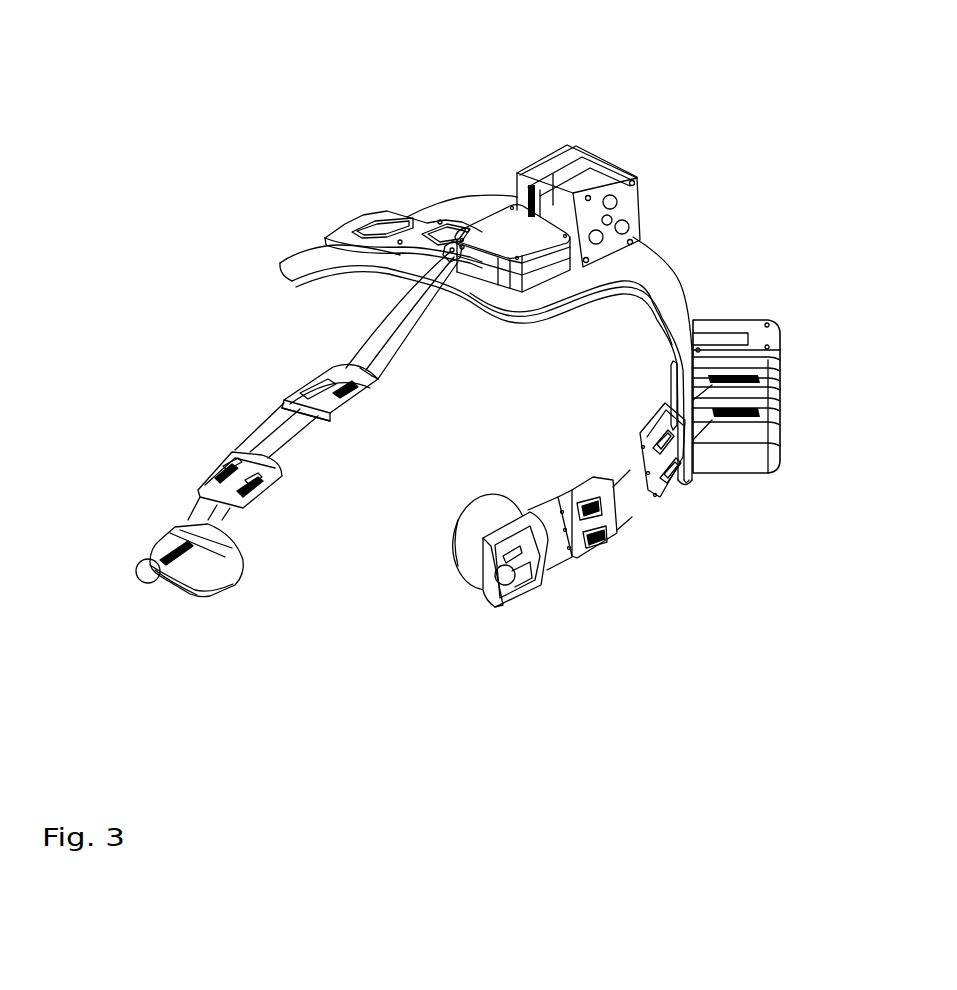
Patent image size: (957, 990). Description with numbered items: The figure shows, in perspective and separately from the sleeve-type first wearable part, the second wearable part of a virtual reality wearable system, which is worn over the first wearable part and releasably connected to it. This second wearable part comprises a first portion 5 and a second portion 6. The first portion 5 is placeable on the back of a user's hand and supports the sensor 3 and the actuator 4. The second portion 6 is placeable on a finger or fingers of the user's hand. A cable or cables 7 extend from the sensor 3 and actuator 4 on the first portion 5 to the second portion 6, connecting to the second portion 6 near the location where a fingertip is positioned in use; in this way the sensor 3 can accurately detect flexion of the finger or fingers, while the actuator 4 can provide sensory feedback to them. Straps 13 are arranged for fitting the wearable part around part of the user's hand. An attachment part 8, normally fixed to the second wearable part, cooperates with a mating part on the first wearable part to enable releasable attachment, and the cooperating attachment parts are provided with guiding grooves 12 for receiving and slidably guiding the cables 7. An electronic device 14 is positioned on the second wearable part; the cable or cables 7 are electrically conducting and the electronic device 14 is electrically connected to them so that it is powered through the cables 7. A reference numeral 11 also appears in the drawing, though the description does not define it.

The sensor 3 is at (500, 228).
The actuator 4 is at (553, 153).
The first portion 5 is at (336, 228).
The second portion 6 is at (173, 522).
The cable or cables 7 is at (296, 412).
The attachment part 8 is at (338, 422).
The clip body 11 is at (367, 393).
The guiding grooves 12 is at (377, 383).
The straps 13 is at (227, 573).
The electronic device 14 is at (148, 583).